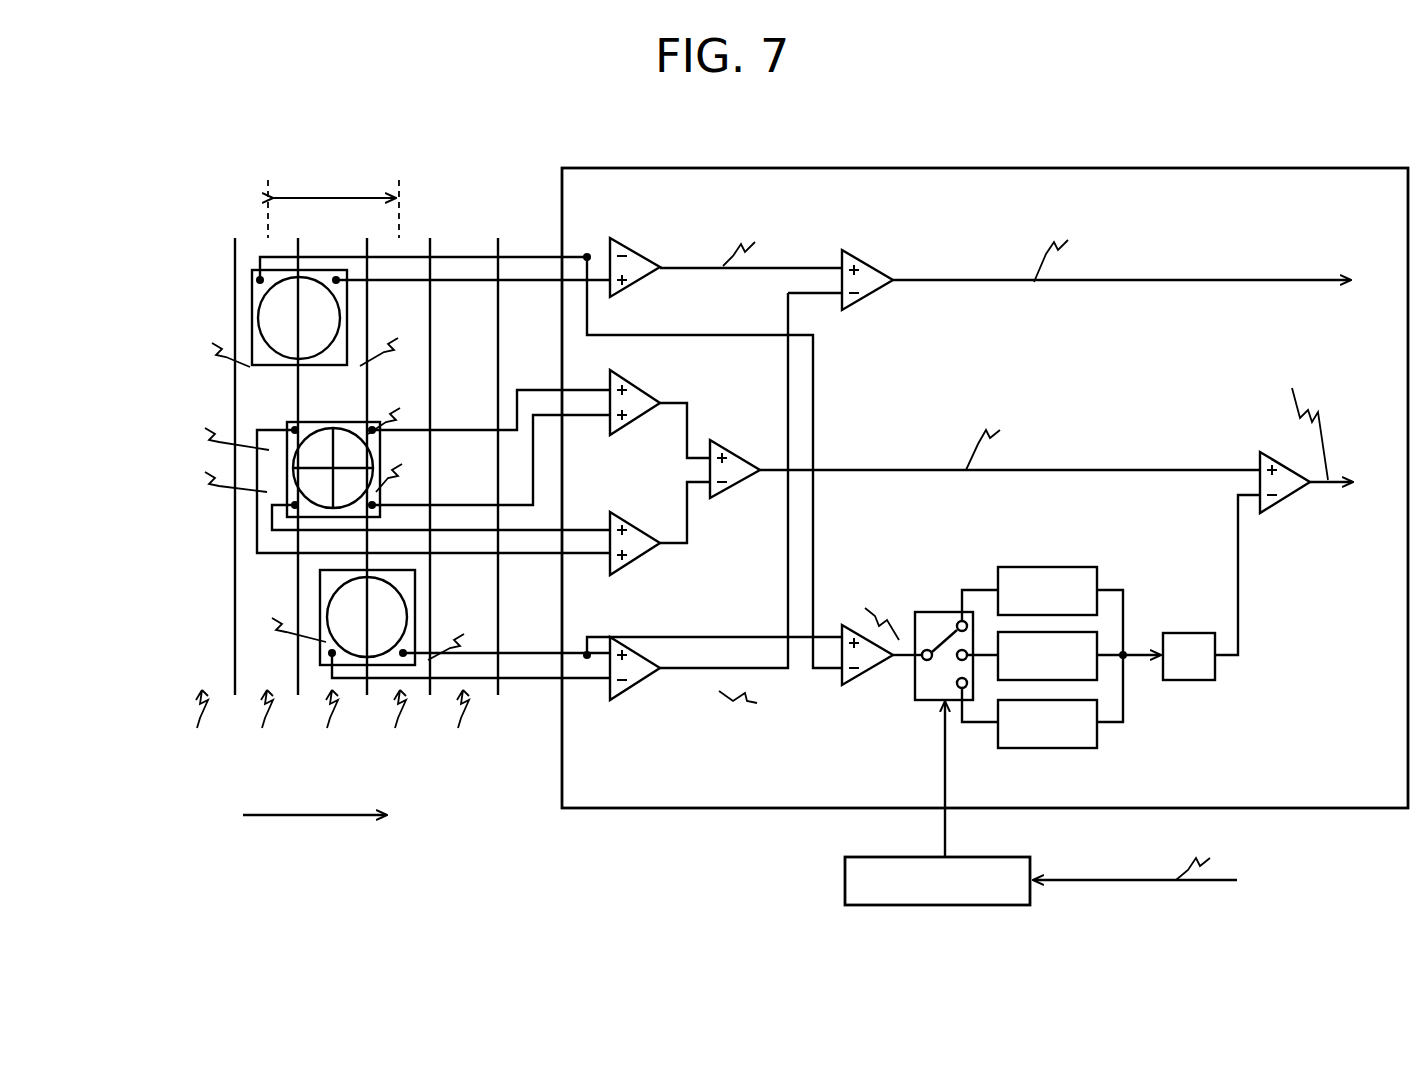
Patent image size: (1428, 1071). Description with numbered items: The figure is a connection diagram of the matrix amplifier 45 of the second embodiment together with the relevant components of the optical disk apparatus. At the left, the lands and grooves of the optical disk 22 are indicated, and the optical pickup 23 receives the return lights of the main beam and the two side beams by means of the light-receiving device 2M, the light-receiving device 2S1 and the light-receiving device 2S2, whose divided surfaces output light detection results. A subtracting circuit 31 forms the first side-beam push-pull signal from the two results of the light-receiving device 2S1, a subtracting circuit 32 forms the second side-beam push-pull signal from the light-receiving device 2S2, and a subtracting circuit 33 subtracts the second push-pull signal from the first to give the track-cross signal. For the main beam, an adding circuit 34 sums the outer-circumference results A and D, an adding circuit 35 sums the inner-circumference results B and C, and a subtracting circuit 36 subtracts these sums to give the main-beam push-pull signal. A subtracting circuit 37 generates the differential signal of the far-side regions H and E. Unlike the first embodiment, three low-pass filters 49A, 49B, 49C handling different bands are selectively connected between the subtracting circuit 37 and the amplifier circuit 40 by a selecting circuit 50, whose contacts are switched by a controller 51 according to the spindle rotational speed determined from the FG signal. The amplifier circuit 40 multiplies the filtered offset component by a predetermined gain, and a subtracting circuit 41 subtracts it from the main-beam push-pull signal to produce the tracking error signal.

The optical disk 22 is at (466, 170).
The optical pickup 23 is at (474, 808).
The matrix amplifier 45 is at (948, 168).
The light-receiving device 2S1 is at (255, 307).
The light-receiving device 2M is at (302, 424).
The light-receiving device 2S2 is at (406, 610).
The subtracting circuit 31 is at (644, 258).
The subtracting circuit 32 is at (644, 705).
The subtracting circuit 33 is at (863, 253).
The adding circuit 34 is at (644, 391).
The adding circuit 35 is at (644, 576).
The subtracting circuit 36 is at (734, 445).
The subtracting circuit 37 is at (864, 695).
The amplifier circuit 40 is at (1184, 698).
The subtracting circuit 41 is at (1284, 515).
The low-pass filter 49A is at (1048, 567).
The low-pass filter 49B is at (1098, 640).
The low-pass filter 49C is at (1048, 748).
The selecting circuit 50 is at (941, 613).
The controller 51 is at (845, 877).